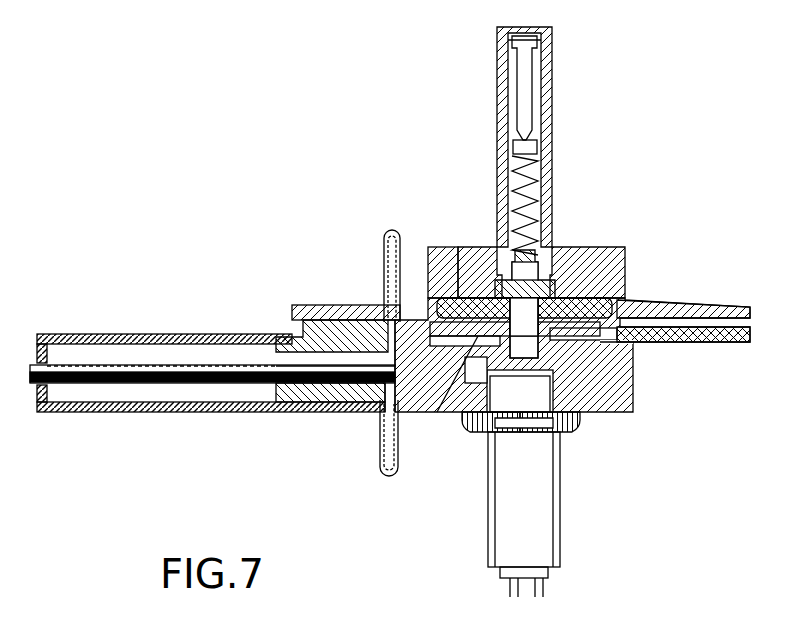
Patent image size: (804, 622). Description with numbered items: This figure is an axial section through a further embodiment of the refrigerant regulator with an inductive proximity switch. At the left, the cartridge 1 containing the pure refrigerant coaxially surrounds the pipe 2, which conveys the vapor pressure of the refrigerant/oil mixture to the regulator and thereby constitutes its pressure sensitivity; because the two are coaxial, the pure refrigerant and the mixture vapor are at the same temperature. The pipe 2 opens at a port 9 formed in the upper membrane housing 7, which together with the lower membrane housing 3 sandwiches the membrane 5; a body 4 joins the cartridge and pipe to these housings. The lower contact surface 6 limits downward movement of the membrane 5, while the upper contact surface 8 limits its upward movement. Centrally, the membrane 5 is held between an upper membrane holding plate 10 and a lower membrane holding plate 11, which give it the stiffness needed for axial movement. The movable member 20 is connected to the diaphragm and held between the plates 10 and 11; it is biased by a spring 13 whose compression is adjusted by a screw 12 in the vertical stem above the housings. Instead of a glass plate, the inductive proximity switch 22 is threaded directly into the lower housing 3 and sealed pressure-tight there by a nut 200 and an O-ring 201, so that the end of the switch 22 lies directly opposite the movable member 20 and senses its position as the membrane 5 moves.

The cartridge 1 is at (140, 395).
The pipe 2 is at (385, 240).
The lower membrane housing 3 is at (636, 405).
The body 4 is at (303, 330).
The membrane 5 is at (628, 290).
The lower contact surface 6 is at (660, 340).
The upper membrane housing 7 is at (610, 270).
The upper contact surface 8 is at (660, 300).
The port 9 is at (385, 300).
The upper membrane holding plate 10 is at (455, 250).
The lower membrane holding plate 11 is at (437, 412).
The screw 12 is at (530, 87).
The spring 13 is at (530, 188).
The movable member 20 is at (545, 366).
The inductive proximity switch 22 is at (530, 527).
The nut 200 is at (470, 440).
The O-ring 201 is at (565, 432).